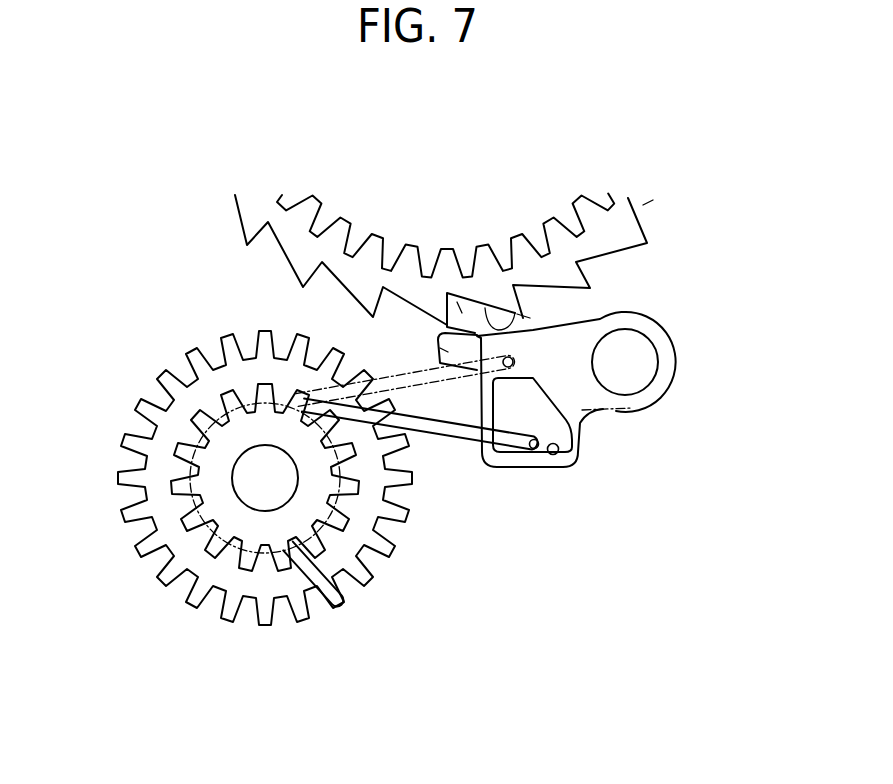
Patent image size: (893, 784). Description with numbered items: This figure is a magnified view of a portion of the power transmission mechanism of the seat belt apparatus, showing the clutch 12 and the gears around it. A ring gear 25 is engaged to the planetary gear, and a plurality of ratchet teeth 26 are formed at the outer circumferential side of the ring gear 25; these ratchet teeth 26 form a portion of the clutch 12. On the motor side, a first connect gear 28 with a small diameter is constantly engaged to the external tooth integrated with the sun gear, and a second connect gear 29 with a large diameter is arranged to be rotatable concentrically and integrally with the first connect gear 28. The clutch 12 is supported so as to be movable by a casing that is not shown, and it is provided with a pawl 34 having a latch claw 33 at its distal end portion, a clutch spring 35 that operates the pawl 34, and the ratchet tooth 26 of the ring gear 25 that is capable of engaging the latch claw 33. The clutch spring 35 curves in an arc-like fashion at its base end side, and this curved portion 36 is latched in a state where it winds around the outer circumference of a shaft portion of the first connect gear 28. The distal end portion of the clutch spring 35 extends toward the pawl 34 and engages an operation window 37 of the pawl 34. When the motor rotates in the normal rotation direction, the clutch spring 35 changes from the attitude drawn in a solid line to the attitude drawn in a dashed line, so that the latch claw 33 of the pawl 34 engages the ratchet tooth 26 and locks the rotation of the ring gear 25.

The clutch 12 is at (566, 498).
The ring gear 25 is at (633, 202).
The ratchet teeth 26 is at (530, 318).
The first connect gear 28 is at (262, 522).
The second connect gear 29 is at (190, 550).
The latch claw 33 is at (437, 347).
The pawl 34 is at (640, 400).
The clutch spring 35 is at (430, 370).
The curved portion 36 is at (200, 515).
The operation window 37 is at (556, 452).